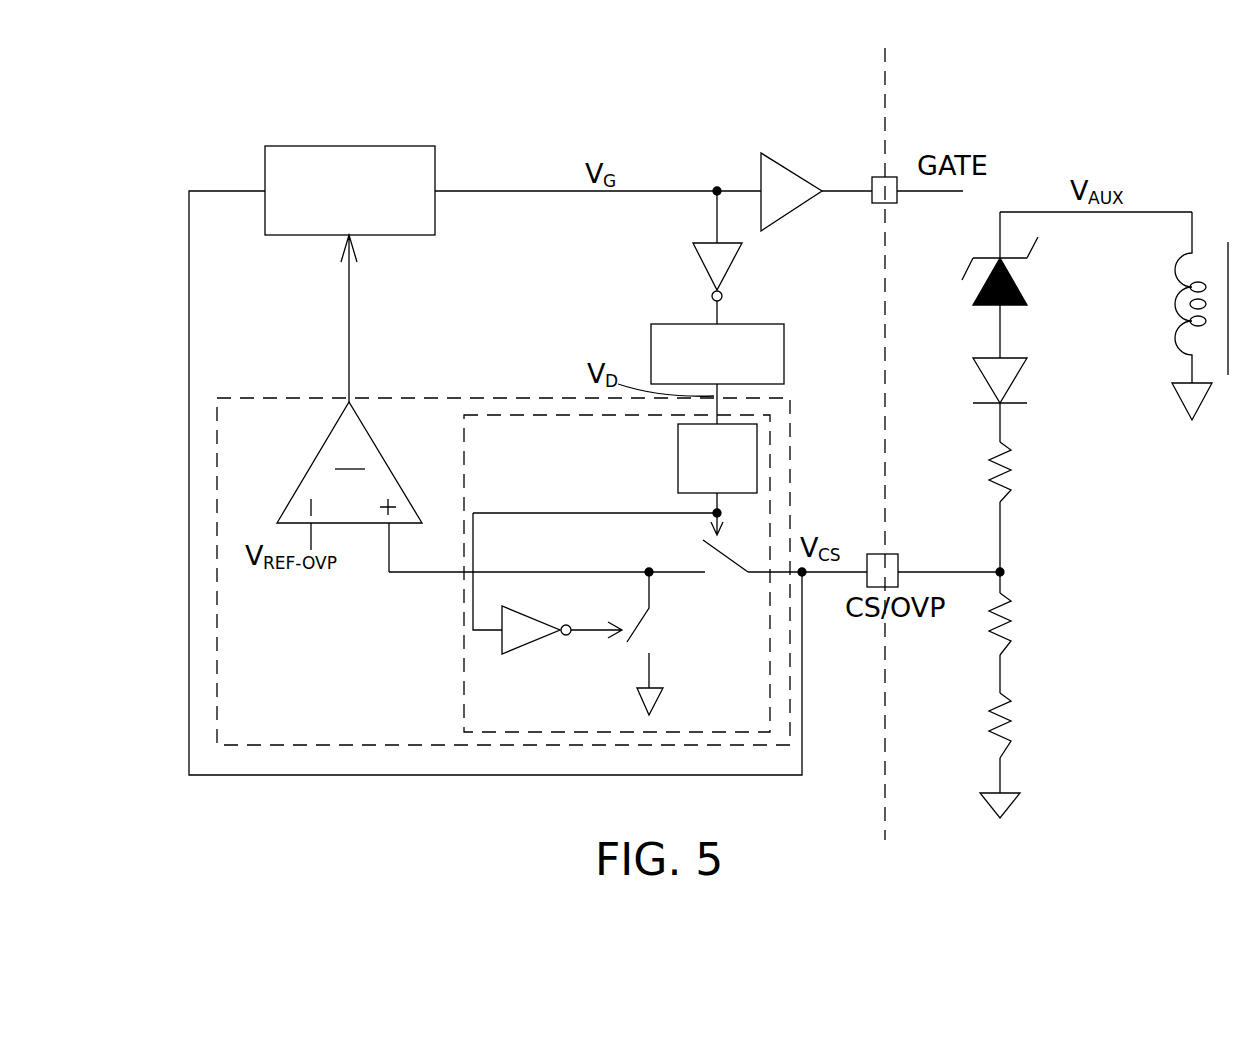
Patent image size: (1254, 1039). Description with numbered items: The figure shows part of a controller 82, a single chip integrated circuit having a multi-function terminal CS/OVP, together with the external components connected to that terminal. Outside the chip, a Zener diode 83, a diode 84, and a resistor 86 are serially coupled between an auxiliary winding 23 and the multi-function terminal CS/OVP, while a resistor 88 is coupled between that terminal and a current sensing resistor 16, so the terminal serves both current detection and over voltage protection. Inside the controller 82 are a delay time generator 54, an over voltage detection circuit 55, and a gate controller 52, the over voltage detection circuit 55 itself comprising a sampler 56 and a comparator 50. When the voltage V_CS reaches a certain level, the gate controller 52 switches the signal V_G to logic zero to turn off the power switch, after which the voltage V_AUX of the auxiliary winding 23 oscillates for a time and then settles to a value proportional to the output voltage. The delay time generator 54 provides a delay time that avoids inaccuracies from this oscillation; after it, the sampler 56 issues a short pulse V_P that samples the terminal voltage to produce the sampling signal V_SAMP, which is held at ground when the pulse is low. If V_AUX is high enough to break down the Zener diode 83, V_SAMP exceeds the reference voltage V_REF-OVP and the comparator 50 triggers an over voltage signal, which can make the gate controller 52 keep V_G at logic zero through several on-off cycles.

The gate controller 52 is at (335, 206).
The controller 82 is at (660, 108).
The Zener diode 83 is at (1022, 272).
The diode 84 is at (1015, 375).
The resistor 86 is at (1010, 477).
The resistor 88 is at (1010, 628).
The current sensing resistor 16 is at (1010, 710).
The auxiliary winding 23 is at (1180, 305).
The delay time generator 54 is at (651, 352).
The over voltage detection circuit 55 is at (445, 398).
The comparator 50 is at (349, 403).
The sampler 56 is at (770, 460).